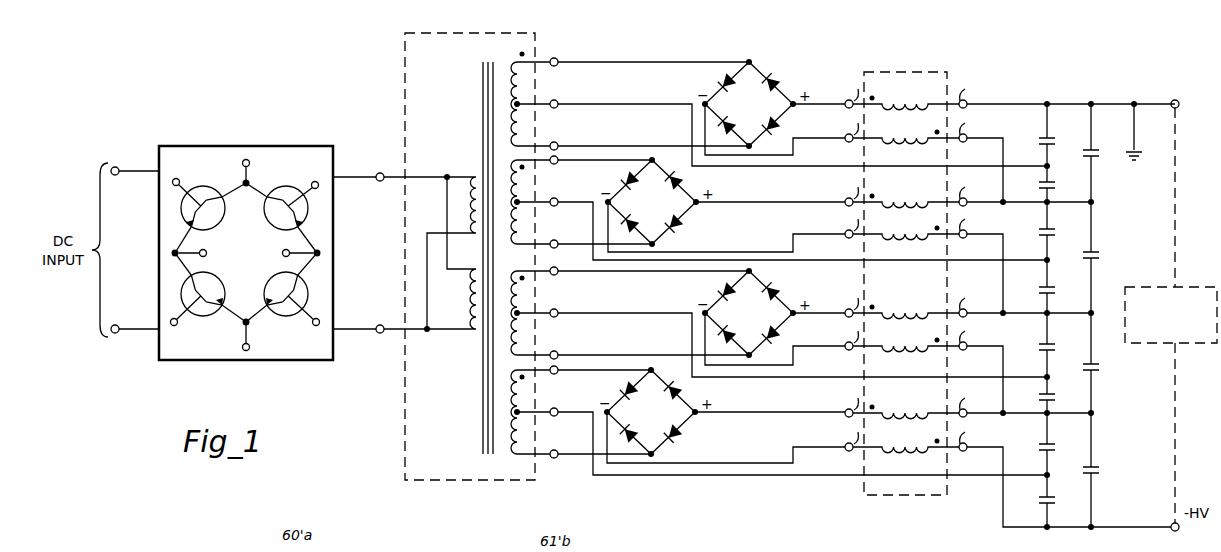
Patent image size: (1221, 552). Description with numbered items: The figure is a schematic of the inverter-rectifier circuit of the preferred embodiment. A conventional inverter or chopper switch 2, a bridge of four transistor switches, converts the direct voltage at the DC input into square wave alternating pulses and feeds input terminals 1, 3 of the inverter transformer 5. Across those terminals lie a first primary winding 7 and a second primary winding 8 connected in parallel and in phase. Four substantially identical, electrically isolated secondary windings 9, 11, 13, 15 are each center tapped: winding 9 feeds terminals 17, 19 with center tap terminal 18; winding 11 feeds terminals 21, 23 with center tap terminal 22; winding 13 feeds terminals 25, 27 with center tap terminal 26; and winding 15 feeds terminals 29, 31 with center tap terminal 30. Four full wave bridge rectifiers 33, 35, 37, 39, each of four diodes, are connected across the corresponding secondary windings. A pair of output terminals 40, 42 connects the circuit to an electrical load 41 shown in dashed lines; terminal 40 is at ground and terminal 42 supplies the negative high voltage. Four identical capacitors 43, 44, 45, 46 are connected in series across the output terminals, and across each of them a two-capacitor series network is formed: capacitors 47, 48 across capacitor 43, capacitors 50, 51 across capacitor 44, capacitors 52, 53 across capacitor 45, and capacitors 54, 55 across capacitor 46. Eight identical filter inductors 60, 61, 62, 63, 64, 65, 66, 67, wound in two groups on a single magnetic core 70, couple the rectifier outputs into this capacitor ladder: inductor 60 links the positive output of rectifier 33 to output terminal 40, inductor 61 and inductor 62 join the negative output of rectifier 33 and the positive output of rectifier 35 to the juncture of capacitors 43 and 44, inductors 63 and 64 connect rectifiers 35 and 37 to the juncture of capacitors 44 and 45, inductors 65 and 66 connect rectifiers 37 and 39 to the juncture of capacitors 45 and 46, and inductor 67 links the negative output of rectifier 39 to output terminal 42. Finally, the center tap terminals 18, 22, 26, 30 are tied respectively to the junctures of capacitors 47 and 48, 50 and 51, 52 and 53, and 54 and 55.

The input terminal 1 is at (380, 170).
The inverter or chopper switch 2 is at (258, 144).
The input terminal 3 is at (380, 336).
The inverter transformer 5 is at (403, 63).
The first primary winding 7 is at (459, 216).
The second primary winding 8 is at (465, 300).
The secondary winding 9 is at (527, 92).
The secondary winding 11 is at (525, 192).
The secondary winding 13 is at (528, 300).
The secondary winding 15 is at (531, 426).
The terminal 17 is at (556, 58).
The center tap terminal 18 is at (557, 102).
The terminal 19 is at (557, 145).
The terminal 21 is at (557, 162).
The center tap terminal 22 is at (558, 199).
The terminal 23 is at (557, 240).
The terminal 25 is at (558, 273).
The center tap terminal 26 is at (557, 317).
The terminal 27 is at (558, 354).
The terminal 29 is at (558, 374).
The center tap terminal 30 is at (557, 411).
The terminal 31 is at (558, 458).
The full wave bridge rectifier 33 is at (740, 112).
The full wave bridge rectifier 35 is at (643, 210).
The full wave bridge rectifier 37 is at (740, 321).
The full wave bridge rectifier 39 is at (642, 420).
The output terminal 40 is at (1177, 100).
The electrical load 41 is at (1214, 284).
The output terminal 42 is at (1177, 530).
The capacitor 43 is at (1099, 153).
The capacitor 44 is at (1099, 256).
The capacitor 45 is at (1099, 368).
The capacitor 46 is at (1099, 472).
The capacitor 47 is at (1040, 140).
The capacitor 48 is at (1054, 185).
The capacitor 50 is at (1040, 234).
The capacitor 51 is at (1039, 291).
The capacitor 52 is at (1039, 349).
The capacitor 53 is at (1039, 395).
The capacitor 54 is at (1039, 449).
The capacitor 55 is at (1039, 502).
The inductor 60 is at (921, 102).
The inductor 61 is at (921, 142).
The inductor 62 is at (921, 200).
The inductor 63 is at (921, 232).
The inductor 64 is at (921, 312).
The inductor 65 is at (921, 350).
The inductor 66 is at (921, 412).
The inductor 67 is at (921, 450).
The magnetic core 70 is at (893, 72).